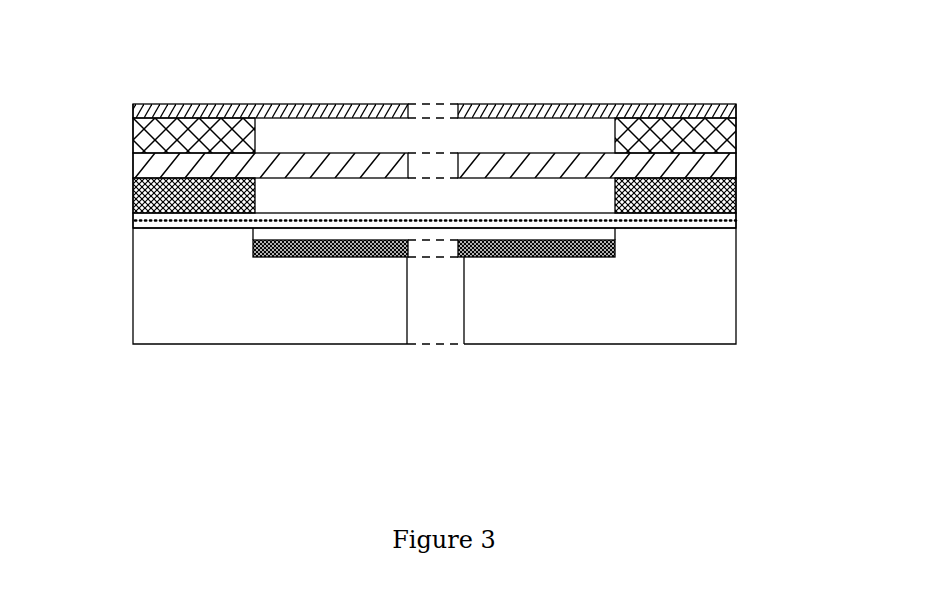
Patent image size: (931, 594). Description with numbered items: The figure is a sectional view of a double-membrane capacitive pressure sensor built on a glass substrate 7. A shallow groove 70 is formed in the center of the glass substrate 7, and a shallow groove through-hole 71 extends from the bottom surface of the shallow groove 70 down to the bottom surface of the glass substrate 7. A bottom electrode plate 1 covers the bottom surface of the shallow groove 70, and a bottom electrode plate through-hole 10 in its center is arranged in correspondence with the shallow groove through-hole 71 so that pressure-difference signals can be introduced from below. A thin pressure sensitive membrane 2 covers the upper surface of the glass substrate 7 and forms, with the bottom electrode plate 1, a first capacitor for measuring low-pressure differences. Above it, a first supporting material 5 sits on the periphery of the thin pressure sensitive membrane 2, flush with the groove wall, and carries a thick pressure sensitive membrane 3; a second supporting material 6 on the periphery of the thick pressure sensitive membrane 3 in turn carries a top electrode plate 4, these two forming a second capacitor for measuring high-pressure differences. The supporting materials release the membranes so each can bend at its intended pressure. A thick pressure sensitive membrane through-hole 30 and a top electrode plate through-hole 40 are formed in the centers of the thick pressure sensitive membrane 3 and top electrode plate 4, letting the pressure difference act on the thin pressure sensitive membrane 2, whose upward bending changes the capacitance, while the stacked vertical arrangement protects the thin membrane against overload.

The bottom electrode plate 1 is at (287, 257).
The thin pressure sensitive membrane 2 is at (657, 218).
The thick pressure sensitive membrane 3 is at (357, 165).
The top electrode plate 4 is at (600, 107).
The first supporting material 5 is at (738, 195).
The second supporting material 6 is at (715, 135).
The glass substrate 7 is at (712, 302).
The bottom electrode plate through-hole 10 is at (425, 248).
The thick pressure sensitive membrane through-hole 30 is at (447, 167).
The top electrode plate through-hole 40 is at (447, 107).
The shallow groove 70 is at (250, 237).
The shallow groove through-hole 71 is at (436, 295).